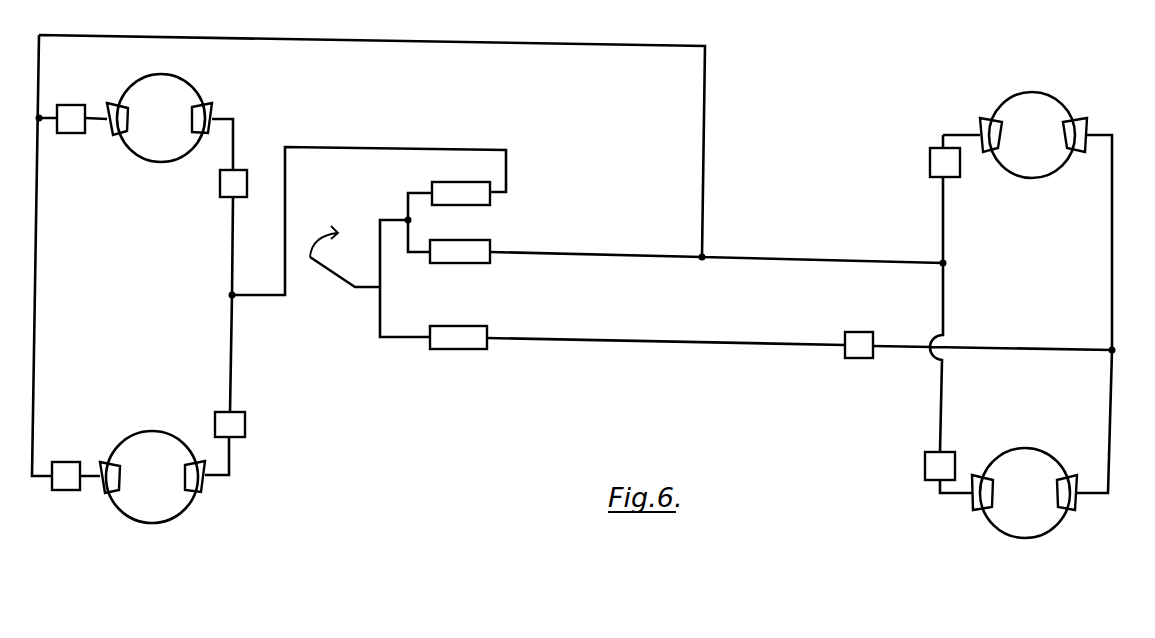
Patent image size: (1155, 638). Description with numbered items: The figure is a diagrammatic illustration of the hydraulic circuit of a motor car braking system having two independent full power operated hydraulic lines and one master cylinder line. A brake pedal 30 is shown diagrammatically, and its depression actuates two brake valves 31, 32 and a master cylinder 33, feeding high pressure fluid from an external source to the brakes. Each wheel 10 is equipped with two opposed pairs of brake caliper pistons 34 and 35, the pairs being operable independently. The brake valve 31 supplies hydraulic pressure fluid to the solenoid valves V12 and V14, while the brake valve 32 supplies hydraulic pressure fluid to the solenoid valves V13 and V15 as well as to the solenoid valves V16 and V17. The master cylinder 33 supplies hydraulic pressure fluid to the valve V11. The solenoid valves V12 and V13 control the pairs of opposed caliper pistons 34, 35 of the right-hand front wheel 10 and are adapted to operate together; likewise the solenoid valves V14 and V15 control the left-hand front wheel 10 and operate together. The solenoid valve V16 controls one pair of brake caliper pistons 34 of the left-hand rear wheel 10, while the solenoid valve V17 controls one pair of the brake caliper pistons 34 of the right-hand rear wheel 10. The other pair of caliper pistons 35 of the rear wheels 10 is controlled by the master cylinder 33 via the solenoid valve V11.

The wheel 10 is at (152, 130).
The brake caliper pistons 34 is at (972, 530).
The brake caliper pistons 35 is at (1062, 522).
The brake pedal 30 is at (340, 276).
The brake valve 31 is at (462, 197).
The brake valve 32 is at (463, 253).
The master cylinder 33 is at (463, 338).
The solenoid valve V11 is at (870, 331).
The solenoid valve V12 is at (215, 183).
The solenoid valve V13 is at (82, 105).
The solenoid valve V14 is at (212, 419).
The solenoid valve V15 is at (77, 461).
The solenoid valve V16 is at (919, 469).
The solenoid valve V17 is at (926, 162).